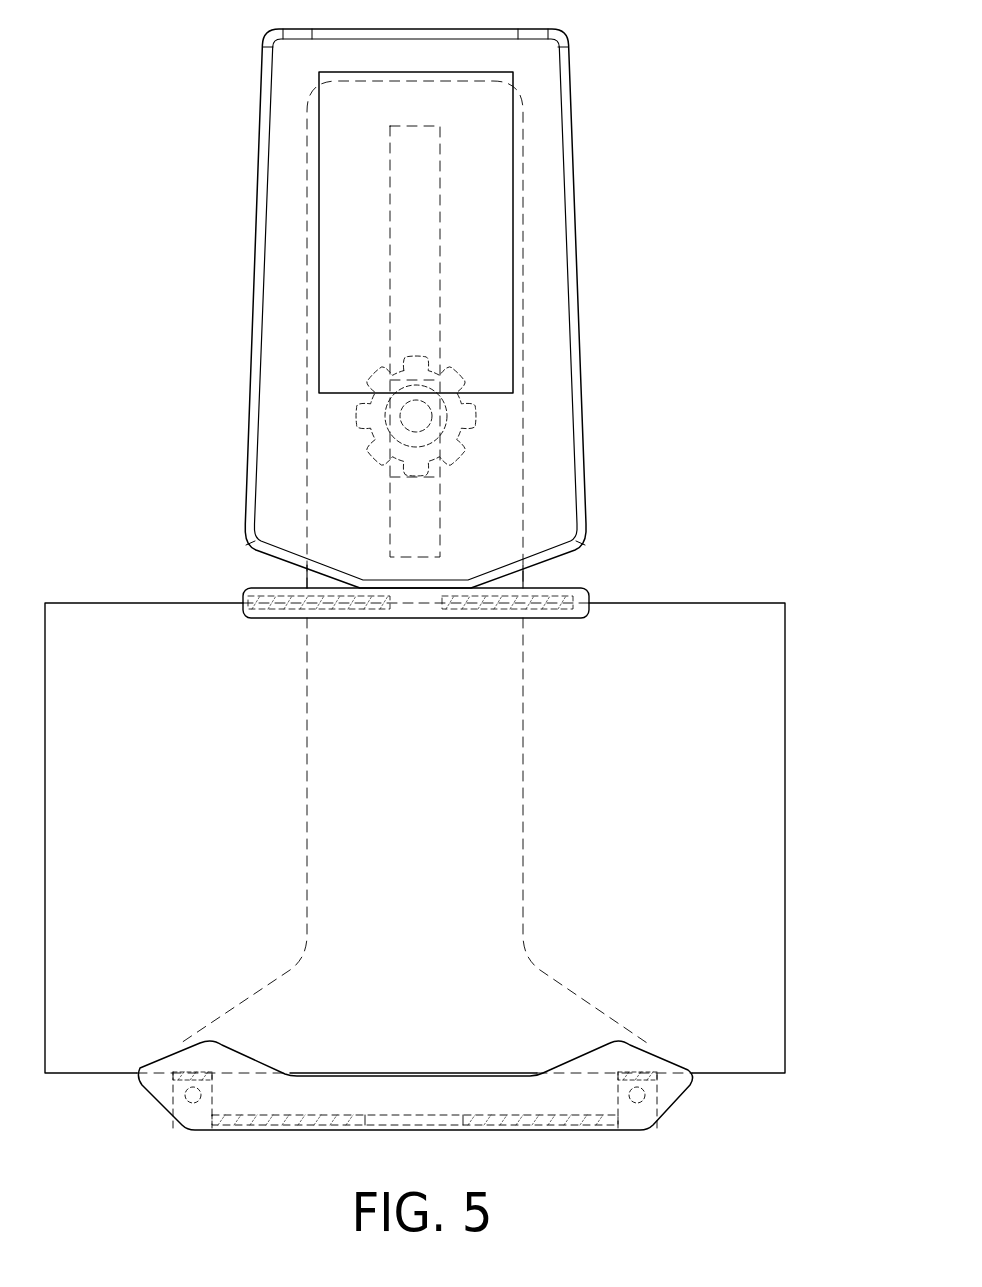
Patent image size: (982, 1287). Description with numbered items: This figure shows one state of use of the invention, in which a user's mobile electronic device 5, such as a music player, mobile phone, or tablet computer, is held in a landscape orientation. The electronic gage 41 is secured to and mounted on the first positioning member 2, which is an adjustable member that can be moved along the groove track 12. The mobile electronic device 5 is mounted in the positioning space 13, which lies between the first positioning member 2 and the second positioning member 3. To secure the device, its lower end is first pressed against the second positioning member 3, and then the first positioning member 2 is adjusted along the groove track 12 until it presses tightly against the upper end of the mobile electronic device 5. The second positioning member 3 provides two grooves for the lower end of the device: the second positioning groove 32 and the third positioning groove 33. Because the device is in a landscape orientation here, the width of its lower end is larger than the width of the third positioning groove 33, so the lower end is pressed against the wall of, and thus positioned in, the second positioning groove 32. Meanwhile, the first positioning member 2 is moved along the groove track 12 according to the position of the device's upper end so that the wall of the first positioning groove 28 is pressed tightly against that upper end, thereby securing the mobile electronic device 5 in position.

The electronic gage 41 is at (548, 137).
The groove track 12 is at (418, 272).
The first positioning member 2 is at (575, 596).
The first positioning groove 28 is at (560, 604).
The mobile electronic device 5 is at (763, 677).
The positioning space 13 is at (333, 782).
The second positioning member 3 is at (670, 1085).
The second positioning groove 32 is at (197, 1052).
The third positioning groove 33 is at (502, 1085).